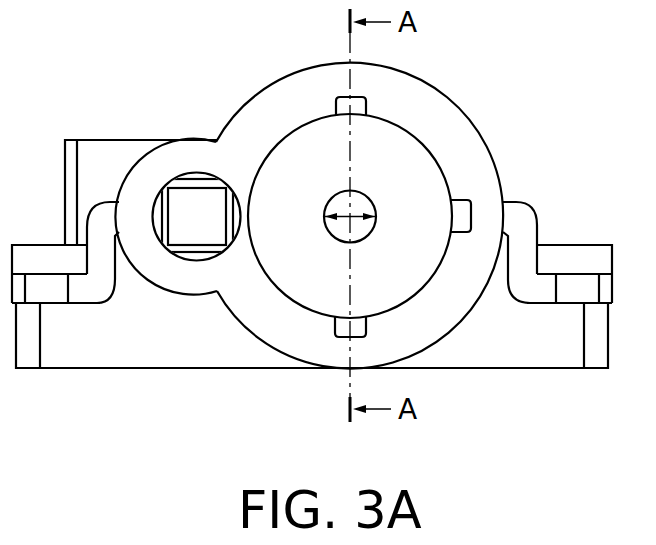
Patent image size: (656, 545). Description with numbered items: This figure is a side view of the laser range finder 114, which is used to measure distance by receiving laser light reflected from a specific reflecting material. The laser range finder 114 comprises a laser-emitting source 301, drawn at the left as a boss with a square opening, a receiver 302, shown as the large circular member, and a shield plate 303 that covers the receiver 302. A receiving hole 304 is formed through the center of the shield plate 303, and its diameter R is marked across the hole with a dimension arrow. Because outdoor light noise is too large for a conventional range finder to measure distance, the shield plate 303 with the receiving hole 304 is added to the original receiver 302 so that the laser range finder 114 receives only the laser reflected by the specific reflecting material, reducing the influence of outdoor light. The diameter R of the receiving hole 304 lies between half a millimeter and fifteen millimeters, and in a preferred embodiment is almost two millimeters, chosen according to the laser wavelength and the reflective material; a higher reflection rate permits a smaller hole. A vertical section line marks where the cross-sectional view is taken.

The laser range finder 114 is at (476, 129).
The laser-emitting source 301 is at (196, 173).
The receiver 302 is at (405, 129).
The shield plate 303 is at (390, 281).
The receiving hole 304 is at (343, 228).
The diameter of the receiving hole R is at (361, 213).